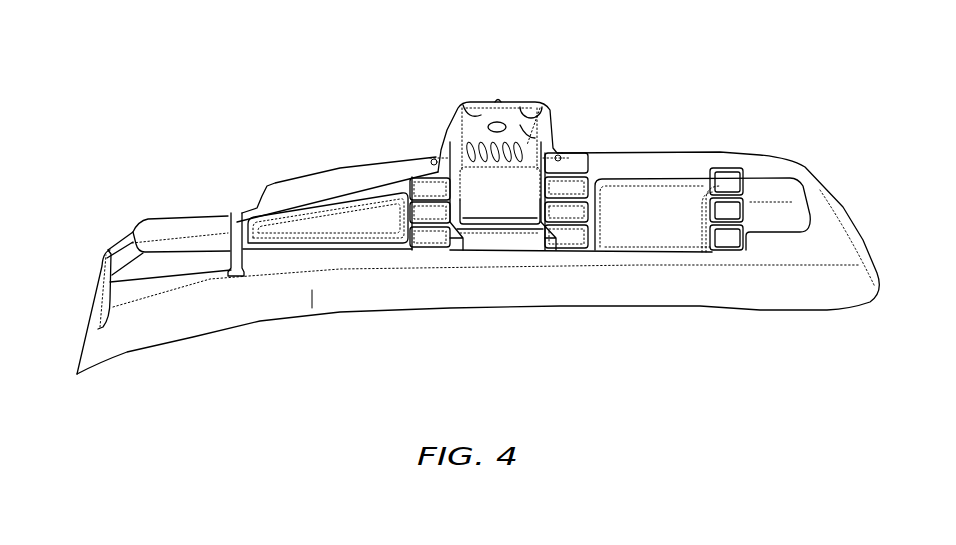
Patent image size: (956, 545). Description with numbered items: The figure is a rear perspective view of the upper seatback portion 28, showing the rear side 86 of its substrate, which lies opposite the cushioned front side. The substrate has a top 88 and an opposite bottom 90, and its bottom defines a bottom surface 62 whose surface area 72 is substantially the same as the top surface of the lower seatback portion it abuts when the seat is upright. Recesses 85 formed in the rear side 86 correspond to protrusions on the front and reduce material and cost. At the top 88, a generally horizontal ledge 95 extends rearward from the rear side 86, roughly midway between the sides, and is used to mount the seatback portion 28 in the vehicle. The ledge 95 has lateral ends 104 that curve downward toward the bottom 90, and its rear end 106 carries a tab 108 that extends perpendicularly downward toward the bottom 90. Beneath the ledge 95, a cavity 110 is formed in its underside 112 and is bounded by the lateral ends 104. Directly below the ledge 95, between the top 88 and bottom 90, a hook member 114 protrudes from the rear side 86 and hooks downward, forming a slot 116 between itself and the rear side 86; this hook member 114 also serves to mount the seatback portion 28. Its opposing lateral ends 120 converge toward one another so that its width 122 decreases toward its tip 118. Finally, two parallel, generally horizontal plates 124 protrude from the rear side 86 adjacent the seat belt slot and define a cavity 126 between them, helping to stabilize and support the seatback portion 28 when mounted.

The seatback portion 28 is at (122, 95).
The bottom surface 62 is at (500, 287).
The surface area 72 is at (703, 310).
The recesses 85 is at (317, 232).
The rear side 86 is at (397, 187).
The top 88 is at (323, 167).
The bottom 90 is at (311, 297).
The ledge 95 is at (478, 100).
The lateral ends 104 is at (440, 130).
The rear end 106 is at (532, 102).
The tab 108 is at (542, 107).
The cavity 110 is at (473, 117).
The underside 112 is at (572, 152).
The hook member 114 is at (465, 235).
The slot 116 is at (455, 243).
The tip 118 is at (493, 237).
The lateral ends 120 is at (535, 203).
The width 122 is at (513, 217).
The plates 124 is at (134, 229).
The cavity 126 is at (207, 243).